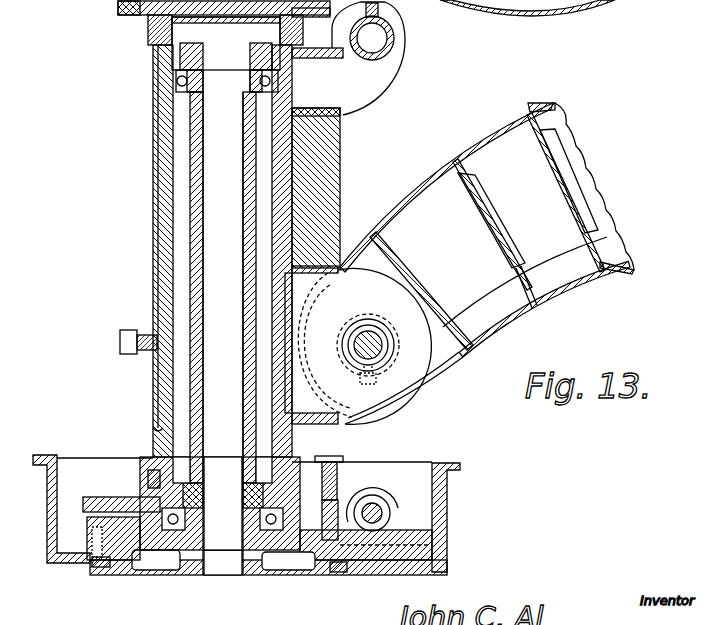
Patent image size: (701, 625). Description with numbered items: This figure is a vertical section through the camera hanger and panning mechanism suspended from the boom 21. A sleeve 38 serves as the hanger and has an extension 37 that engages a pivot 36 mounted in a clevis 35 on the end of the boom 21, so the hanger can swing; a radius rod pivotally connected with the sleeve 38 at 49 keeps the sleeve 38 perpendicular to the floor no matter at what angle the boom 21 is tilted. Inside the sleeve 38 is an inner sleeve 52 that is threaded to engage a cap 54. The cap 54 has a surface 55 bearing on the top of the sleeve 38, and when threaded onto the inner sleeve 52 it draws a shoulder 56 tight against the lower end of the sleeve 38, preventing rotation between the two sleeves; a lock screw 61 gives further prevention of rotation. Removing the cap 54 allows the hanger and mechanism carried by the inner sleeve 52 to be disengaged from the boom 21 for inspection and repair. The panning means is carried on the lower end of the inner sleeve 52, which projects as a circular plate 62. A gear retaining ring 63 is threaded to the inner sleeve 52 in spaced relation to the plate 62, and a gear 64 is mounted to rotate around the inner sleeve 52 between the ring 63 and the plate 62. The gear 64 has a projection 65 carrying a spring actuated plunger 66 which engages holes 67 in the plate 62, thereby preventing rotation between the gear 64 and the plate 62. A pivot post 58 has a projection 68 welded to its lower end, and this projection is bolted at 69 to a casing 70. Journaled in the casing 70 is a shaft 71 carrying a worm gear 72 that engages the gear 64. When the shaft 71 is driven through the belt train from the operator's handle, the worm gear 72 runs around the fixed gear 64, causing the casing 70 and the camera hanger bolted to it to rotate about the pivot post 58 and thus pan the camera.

The boom 21 is at (592, 278).
The clevis 35 is at (440, 366).
The pivot 36 is at (376, 336).
The extension 37 is at (347, 292).
The sleeve 38 is at (153, 133).
The pivotal connection 49 is at (388, 48).
The inner sleeve 52 is at (170, 184).
The cap 54 is at (160, 30).
The surface 55 is at (163, 45).
The shoulder 56 is at (157, 428).
The pivot post 58 is at (210, 312).
The lock screw 61 is at (120, 346).
The circular plate 62 is at (145, 530).
The gear retaining ring 63 is at (148, 474).
The gear 64 is at (84, 503).
The projection 65 is at (340, 472).
The spring actuated plunger 66 is at (330, 456).
The holes 67 is at (100, 525).
The projection 68 is at (185, 566).
The bolt 69 is at (98, 566).
The casing 70 is at (447, 545).
The shaft 71 is at (390, 508).
The worm gear 72 is at (378, 488).